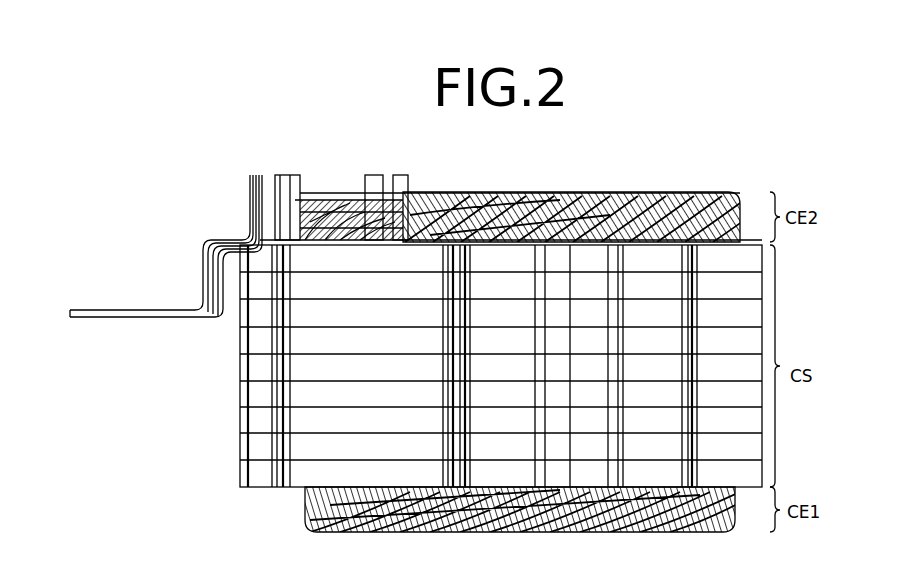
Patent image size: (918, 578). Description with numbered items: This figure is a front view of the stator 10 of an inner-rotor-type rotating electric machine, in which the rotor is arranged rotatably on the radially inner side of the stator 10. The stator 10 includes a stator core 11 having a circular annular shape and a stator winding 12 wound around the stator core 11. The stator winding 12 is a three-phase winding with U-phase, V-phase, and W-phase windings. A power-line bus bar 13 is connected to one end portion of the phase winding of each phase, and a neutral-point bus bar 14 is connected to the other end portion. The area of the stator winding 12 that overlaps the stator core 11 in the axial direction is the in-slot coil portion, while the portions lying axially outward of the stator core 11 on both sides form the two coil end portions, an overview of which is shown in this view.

The stator 10 is at (656, 184).
The stator core 11 is at (240, 448).
The stator winding 12 is at (537, 192).
The power-line bus bar 13 is at (201, 272).
The neutral-point bus bar 14 is at (465, 192).